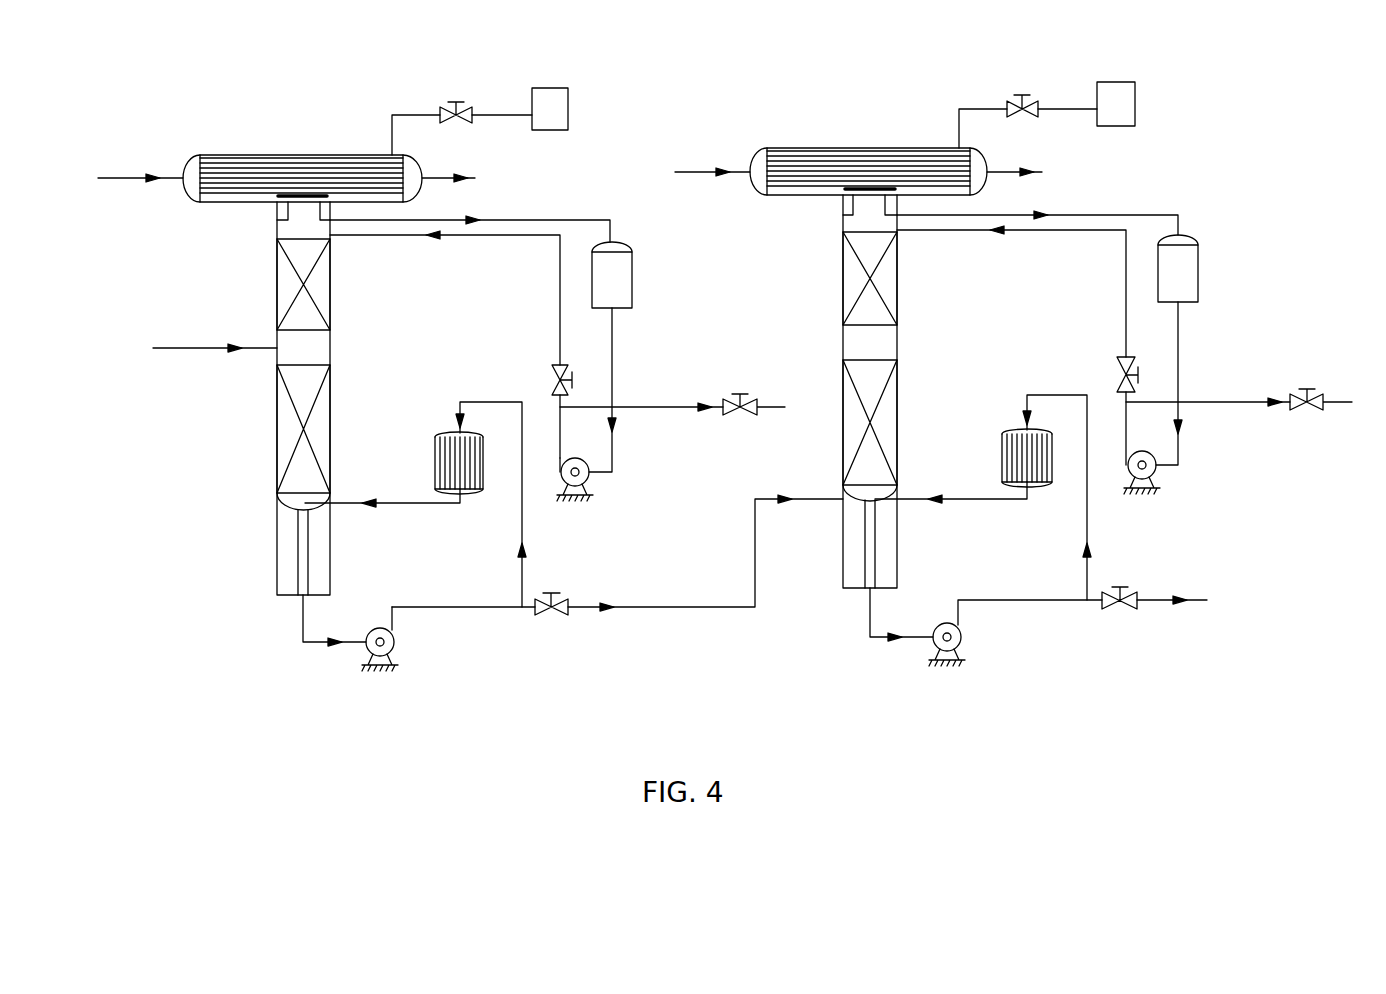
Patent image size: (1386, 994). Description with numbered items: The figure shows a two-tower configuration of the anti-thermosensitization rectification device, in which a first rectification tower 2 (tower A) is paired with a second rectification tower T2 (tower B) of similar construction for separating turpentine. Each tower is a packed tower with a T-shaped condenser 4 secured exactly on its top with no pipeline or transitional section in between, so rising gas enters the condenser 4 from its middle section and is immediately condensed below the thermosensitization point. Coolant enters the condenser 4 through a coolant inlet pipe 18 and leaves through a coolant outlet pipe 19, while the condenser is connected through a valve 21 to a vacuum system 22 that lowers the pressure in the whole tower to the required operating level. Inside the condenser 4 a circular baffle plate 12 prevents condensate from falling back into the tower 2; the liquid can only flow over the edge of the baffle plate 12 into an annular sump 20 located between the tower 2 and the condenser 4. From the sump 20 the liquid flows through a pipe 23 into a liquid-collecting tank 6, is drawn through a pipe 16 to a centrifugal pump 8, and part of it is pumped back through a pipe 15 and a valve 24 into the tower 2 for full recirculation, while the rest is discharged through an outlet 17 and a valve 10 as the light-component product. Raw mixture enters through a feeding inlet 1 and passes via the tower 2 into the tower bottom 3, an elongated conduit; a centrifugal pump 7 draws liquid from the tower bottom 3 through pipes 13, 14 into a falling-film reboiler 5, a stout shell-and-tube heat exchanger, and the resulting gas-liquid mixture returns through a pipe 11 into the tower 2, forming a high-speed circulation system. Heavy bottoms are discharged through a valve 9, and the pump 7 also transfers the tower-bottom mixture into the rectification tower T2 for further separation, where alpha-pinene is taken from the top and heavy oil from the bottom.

The feeding inlet 1 is at (200, 348).
The rectification tower 2 is at (320, 360).
The tower bottom 3 is at (298, 555).
The T-shaped condenser 4 is at (258, 155).
The falling-film reboiler 5 is at (435, 462).
The liquid-collecting tank 6 is at (632, 280).
The centrifugal pump 7 is at (375, 628).
The centrifugal pump 8 is at (585, 500).
The valve 9 is at (560, 615).
The valve 10 is at (750, 418).
The pipe 11 is at (395, 503).
The baffle plate 12 is at (312, 195).
The pipe 13 is at (472, 607).
The pipe 14 is at (460, 400).
The pipe 15 is at (475, 235).
The pipe 16 is at (613, 388).
The outlet 17 is at (647, 407).
The coolant inlet pipe 18 is at (137, 178).
The coolant outlet pipe 19 is at (435, 178).
The sump 20 is at (327, 232).
The valve 21 is at (470, 123).
The vacuum system 22 is at (552, 88).
The pipe 23 is at (528, 220).
The valve 24 is at (552, 370).
The rectification tower B T2 is at (897, 335).